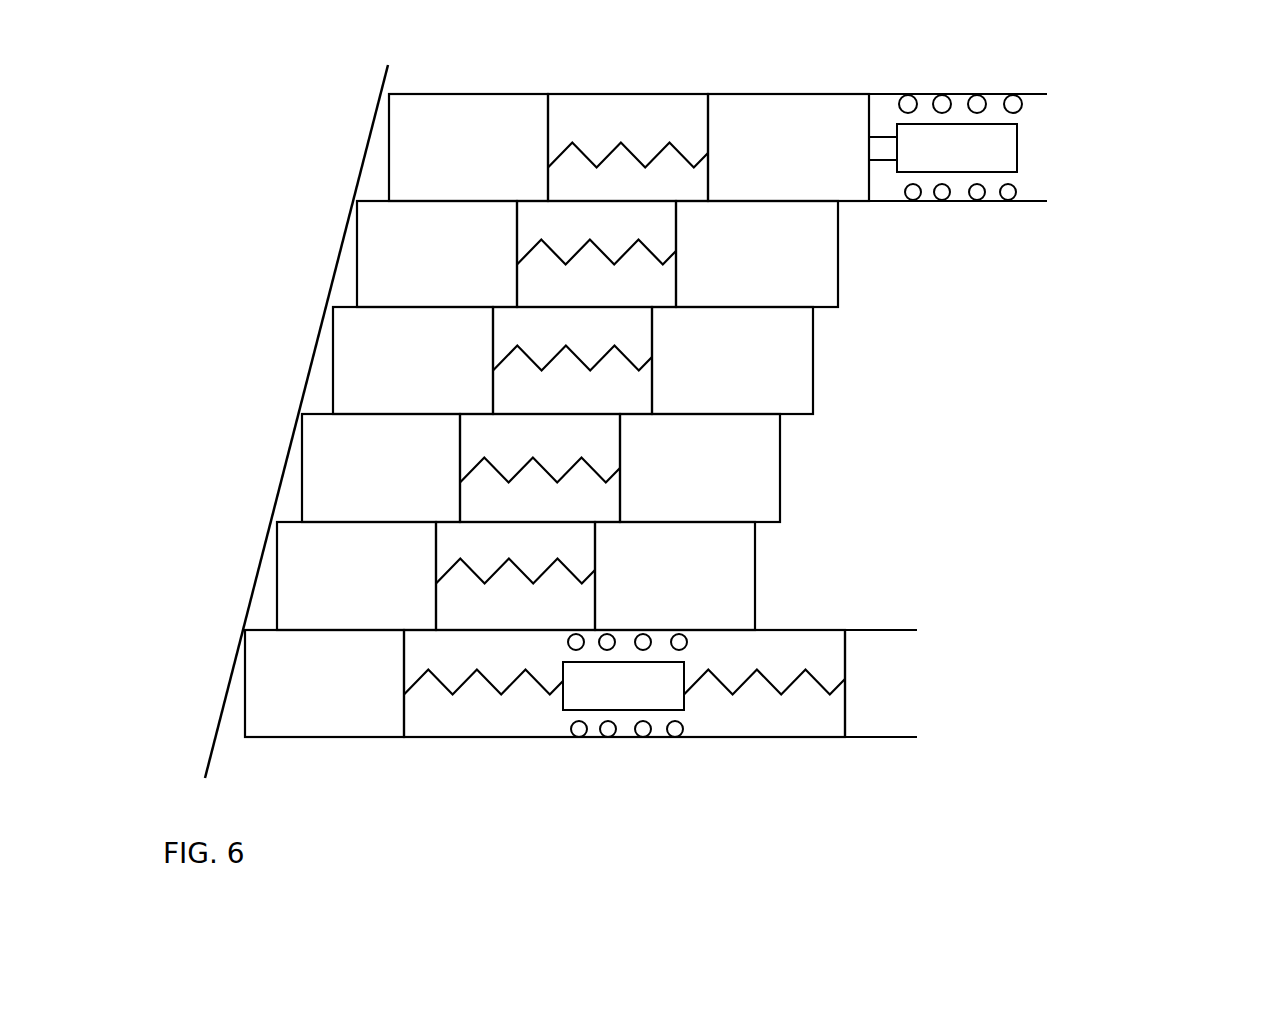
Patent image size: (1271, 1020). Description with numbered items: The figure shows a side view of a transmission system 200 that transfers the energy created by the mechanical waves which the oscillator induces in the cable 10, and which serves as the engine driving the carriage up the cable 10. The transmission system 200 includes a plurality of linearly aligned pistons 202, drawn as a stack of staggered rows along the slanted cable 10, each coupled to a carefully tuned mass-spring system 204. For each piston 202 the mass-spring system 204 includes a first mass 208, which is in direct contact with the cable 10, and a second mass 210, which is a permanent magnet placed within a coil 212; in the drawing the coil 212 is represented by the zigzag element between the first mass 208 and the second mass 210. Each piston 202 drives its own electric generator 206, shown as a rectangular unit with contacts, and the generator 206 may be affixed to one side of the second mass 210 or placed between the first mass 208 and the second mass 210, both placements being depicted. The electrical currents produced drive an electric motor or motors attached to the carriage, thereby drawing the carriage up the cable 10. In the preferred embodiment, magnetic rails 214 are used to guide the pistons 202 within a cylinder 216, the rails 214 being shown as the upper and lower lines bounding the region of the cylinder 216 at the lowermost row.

The cable 10 is at (380, 102).
The transmission system 200 is at (1193, 359).
The pistons 202 is at (387, 148).
The mass-spring system 204 is at (890, 487).
The electric generator 206 is at (957, 172).
The first mass 208 is at (435, 105).
The second mass 210 is at (740, 122).
The coil 212 is at (580, 105).
The magnetic rails 214 is at (908, 630).
The cylinder 216 is at (936, 696).